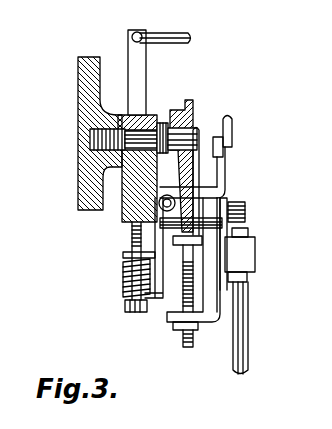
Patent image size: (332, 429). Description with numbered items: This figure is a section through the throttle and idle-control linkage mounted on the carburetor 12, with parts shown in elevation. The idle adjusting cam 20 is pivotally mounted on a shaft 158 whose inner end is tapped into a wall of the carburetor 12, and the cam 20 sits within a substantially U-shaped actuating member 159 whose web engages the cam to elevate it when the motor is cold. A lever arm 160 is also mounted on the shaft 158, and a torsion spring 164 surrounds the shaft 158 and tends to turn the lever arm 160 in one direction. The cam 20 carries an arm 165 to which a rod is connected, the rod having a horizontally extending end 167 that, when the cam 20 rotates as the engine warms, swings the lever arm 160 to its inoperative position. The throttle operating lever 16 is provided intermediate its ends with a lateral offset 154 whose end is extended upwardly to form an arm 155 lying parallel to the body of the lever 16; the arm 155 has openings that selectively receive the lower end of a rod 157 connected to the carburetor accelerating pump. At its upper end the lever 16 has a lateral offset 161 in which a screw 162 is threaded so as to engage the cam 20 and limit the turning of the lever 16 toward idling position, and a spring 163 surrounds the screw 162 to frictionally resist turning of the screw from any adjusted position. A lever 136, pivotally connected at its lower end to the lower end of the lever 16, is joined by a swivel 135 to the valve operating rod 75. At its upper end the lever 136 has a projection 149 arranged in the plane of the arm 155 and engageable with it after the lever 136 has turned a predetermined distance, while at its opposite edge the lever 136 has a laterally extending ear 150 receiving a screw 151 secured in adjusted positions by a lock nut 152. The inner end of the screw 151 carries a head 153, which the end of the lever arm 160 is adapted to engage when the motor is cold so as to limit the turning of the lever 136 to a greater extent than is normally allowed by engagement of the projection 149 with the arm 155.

The carburetor 12 is at (80, 62).
The idle adjusting cam 20 is at (146, 115).
The U-shaped actuating member 159 is at (118, 208).
The arm 165 is at (128, 62).
The horizontally extending end 167 is at (177, 34).
The torsion spring 164 is at (176, 112).
The shaft 158 is at (200, 132).
The rod 157 is at (233, 138).
The arm 155 is at (226, 176).
The lateral offset 154 is at (205, 189).
The projection 149 is at (234, 208).
The lever arm 160 is at (246, 215).
The lever 136 is at (250, 243).
The swivel 135 is at (256, 256).
The valve operating rod 75 is at (248, 341).
The laterally extending ear 150 is at (209, 323).
The head 153 is at (201, 246).
The lock nut 152 is at (173, 330).
The screw 151 is at (190, 347).
The operating lever 16 is at (163, 237).
The lateral offset 161 is at (123, 256).
The screw 162 is at (123, 278).
The spring 163 is at (123, 304).